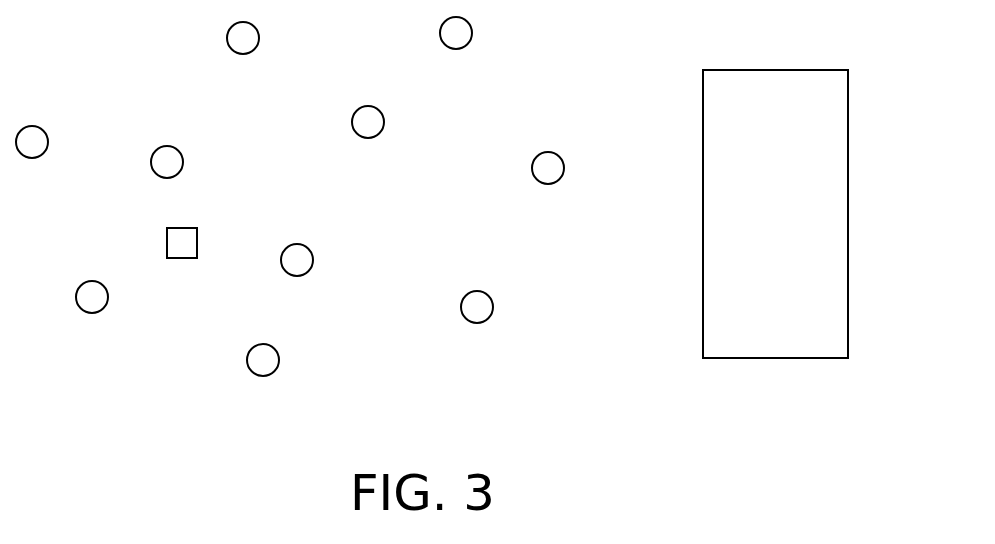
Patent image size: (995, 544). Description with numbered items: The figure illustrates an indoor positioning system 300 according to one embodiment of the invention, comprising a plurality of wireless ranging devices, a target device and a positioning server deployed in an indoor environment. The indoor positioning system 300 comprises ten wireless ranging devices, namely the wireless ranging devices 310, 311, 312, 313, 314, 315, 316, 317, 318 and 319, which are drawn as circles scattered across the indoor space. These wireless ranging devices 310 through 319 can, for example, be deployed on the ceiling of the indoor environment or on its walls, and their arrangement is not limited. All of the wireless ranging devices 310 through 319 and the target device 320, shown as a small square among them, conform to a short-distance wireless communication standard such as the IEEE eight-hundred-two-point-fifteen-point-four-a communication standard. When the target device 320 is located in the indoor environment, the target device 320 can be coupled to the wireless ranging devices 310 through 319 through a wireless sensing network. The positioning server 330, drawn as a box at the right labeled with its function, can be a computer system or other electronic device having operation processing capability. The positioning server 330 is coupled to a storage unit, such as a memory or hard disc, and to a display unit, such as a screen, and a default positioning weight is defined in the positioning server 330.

The indoor positioning system 300 is at (850, 468).
The wireless ranging device 310 is at (493, 306).
The wireless ranging device 311 is at (259, 37).
The wireless ranging device 312 is at (48, 141).
The wireless ranging device 313 is at (183, 161).
The wireless ranging device 314 is at (108, 296).
The wireless ranging device 315 is at (279, 359).
The wireless ranging device 316 is at (313, 259).
The wireless ranging device 317 is at (384, 121).
The wireless ranging device 318 is at (472, 32).
The wireless ranging device 319 is at (564, 167).
The target device 320 is at (197, 234).
The positioning server 330 is at (776, 70).